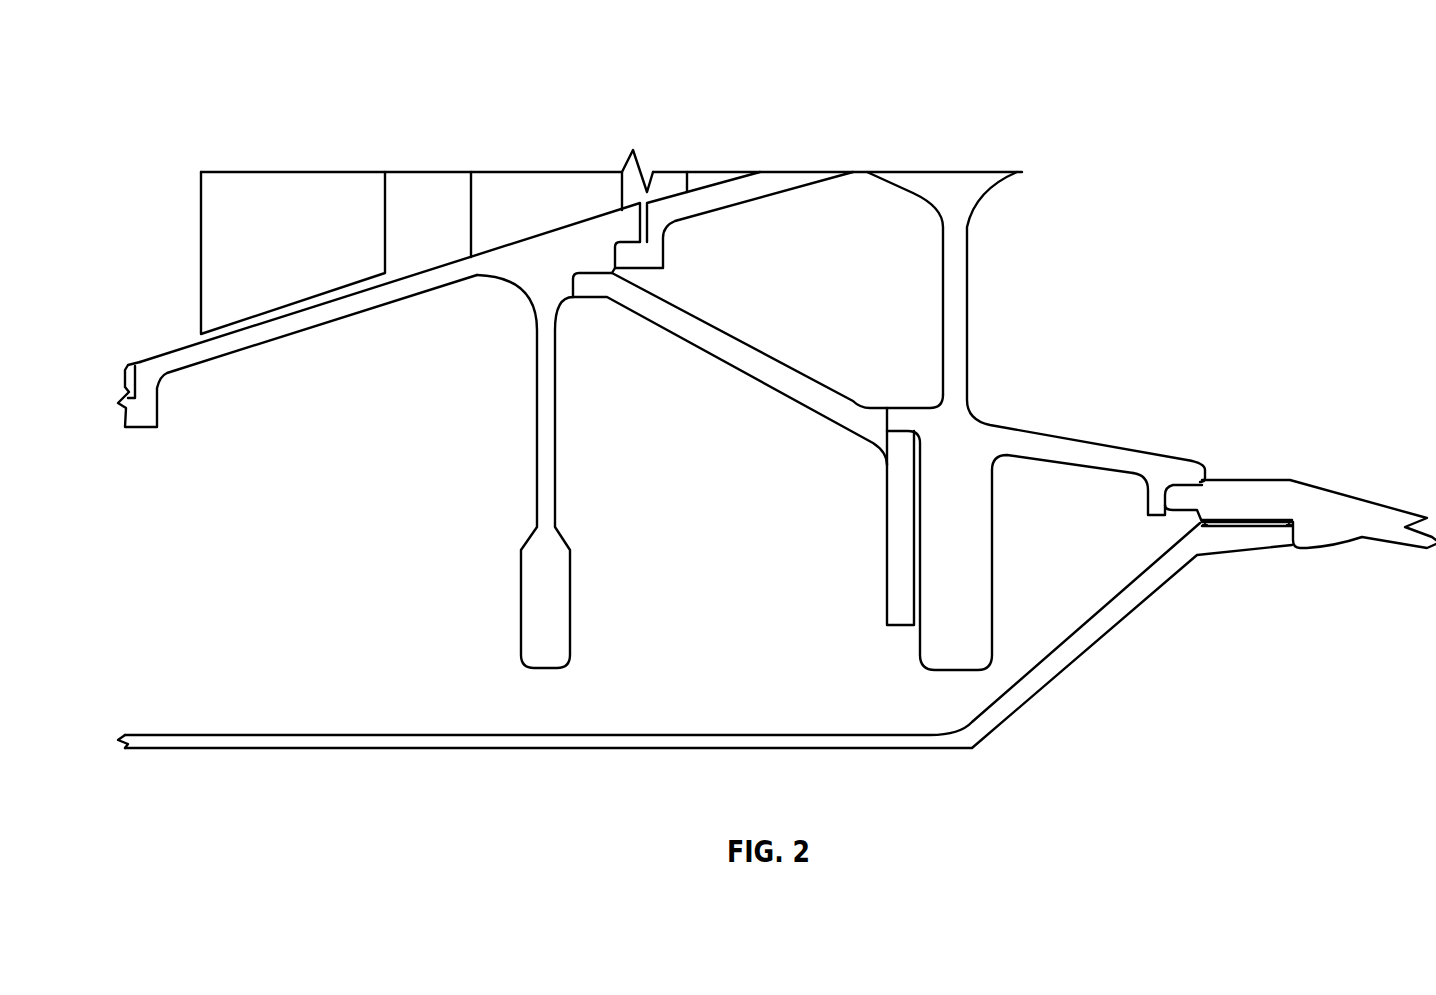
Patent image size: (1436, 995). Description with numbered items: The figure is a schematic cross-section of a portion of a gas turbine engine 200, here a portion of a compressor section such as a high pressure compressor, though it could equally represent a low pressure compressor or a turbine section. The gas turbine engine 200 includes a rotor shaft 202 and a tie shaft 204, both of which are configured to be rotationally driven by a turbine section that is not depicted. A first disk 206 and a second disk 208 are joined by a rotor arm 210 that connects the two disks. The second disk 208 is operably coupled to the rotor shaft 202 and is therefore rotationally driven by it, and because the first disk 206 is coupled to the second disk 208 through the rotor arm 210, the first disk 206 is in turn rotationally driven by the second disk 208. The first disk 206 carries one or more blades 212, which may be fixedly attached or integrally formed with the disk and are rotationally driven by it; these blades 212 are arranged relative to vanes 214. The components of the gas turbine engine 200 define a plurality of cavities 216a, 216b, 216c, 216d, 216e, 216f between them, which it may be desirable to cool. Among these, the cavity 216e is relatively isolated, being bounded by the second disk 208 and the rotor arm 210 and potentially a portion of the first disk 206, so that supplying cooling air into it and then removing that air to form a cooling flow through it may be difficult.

The gas turbine engine 200 is at (1310, 73).
The rotor shaft 202 is at (1320, 507).
The tie shaft 204 is at (968, 735).
The first disk 206 is at (538, 628).
The second disk 208 is at (975, 448).
The rotor arm 210 is at (737, 363).
The blades 212 is at (527, 197).
The vanes 214 is at (275, 215).
The cavity 216a is at (1223, 686).
The cavity 216b is at (1110, 547).
The cavity 216c is at (756, 619).
The cavity 216d is at (361, 564).
The cavity 216e is at (1228, 372).
The cavity 216f is at (861, 290).